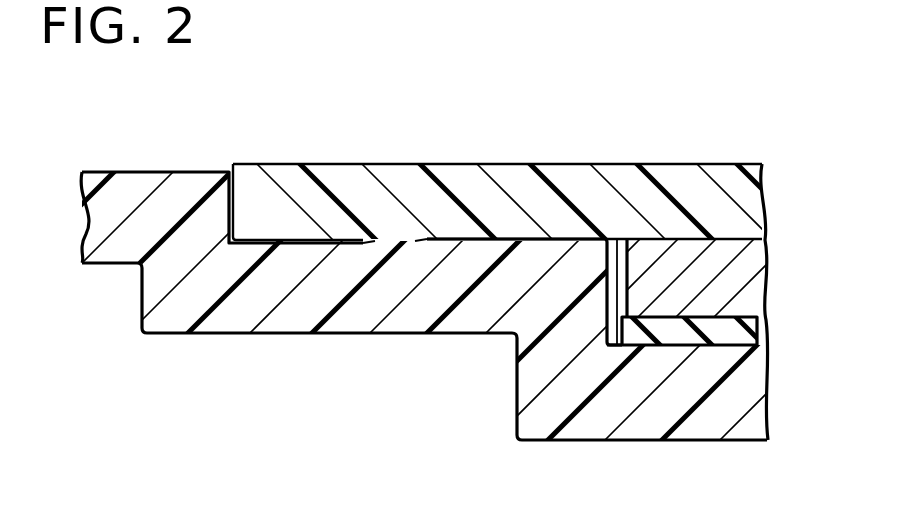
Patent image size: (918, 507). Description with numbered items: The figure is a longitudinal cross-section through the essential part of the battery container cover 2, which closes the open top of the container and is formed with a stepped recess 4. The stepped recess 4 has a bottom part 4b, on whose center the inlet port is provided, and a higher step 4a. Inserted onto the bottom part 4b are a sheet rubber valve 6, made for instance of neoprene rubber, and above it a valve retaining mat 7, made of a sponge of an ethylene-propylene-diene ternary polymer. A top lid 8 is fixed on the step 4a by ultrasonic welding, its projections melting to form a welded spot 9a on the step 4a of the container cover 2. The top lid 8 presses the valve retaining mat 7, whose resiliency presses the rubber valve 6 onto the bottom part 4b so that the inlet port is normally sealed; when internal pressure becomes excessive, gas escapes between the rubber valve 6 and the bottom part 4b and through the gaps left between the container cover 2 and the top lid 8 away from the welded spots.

The container cover 2 is at (285, 320).
The stepped recess 4 is at (617, 260).
The step 4a is at (533, 242).
The bottom part 4b is at (682, 345).
The sheet rubber valve 6 is at (730, 332).
The valve retaining mat 7 is at (748, 270).
The top lid 8 is at (290, 187).
The welded spot 9a is at (398, 240).